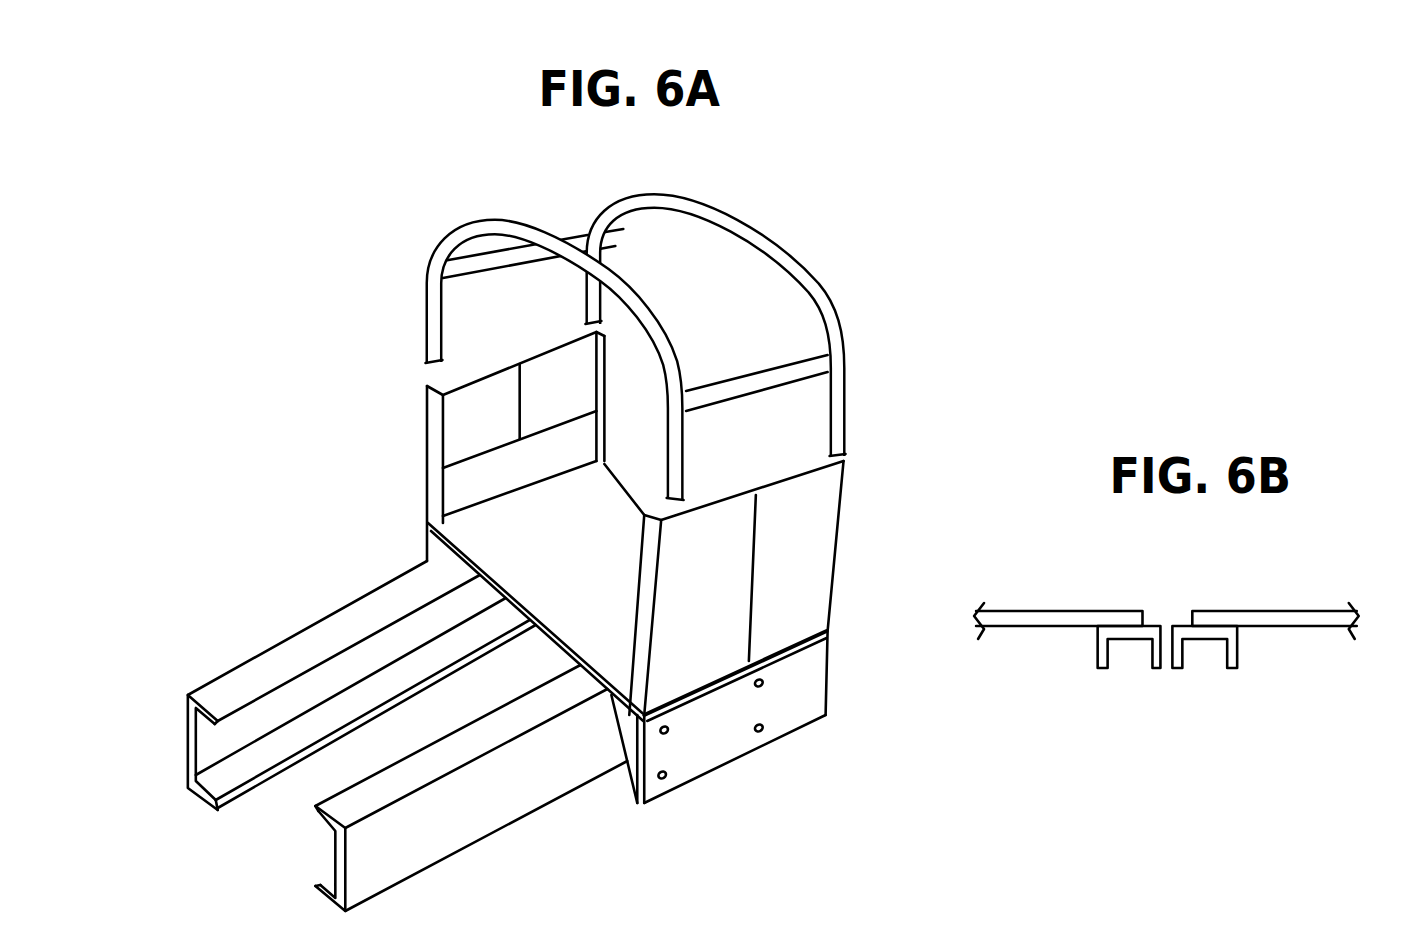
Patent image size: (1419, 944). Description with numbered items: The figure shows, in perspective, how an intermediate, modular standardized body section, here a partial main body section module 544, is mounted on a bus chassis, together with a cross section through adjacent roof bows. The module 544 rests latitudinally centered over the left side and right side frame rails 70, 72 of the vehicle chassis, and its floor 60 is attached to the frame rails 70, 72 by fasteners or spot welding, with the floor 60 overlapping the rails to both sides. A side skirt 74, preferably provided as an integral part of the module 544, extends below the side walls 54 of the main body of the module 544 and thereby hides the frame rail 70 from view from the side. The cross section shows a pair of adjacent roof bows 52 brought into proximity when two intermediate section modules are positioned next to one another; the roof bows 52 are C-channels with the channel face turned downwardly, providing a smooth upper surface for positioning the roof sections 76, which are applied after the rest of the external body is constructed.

In FIG. 6A, the partial main body section module 544 is at (873, 262).
In FIG. 6A, the roof bows 52 is at (475, 228).
In FIG. 6B, the roof bows 52 is at (1158, 670).
In FIG. 6A, the side walls 54 is at (478, 420).
In FIG. 6A, the floor 60 is at (600, 497).
In FIG. 6A, the frame rail 70 is at (470, 823).
In FIG. 6A, the frame rail 72 is at (293, 632).
In FIG. 6A, the side skirt 74 is at (703, 773).
In FIG. 6B, the roof sections 76 is at (1085, 613).